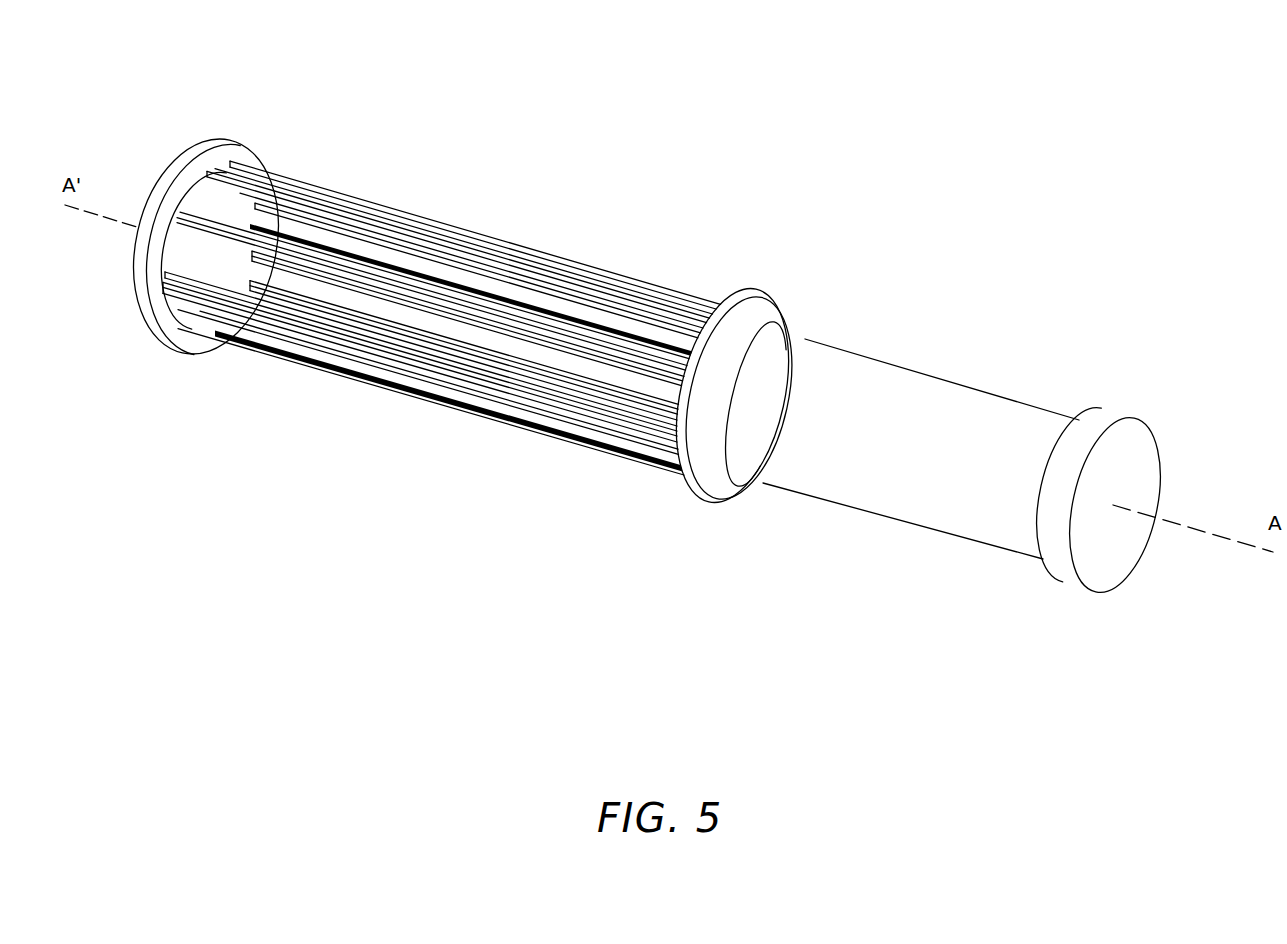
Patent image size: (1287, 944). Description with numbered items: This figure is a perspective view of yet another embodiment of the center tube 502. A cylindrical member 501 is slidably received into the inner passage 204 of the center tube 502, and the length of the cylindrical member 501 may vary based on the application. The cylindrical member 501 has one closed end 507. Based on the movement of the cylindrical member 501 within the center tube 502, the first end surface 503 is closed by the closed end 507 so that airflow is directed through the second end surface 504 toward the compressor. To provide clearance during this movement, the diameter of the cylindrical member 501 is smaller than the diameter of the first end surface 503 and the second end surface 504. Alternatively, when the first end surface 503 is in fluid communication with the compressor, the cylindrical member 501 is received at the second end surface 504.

The center tube 502 is at (1000, 122).
The second end surface 504 is at (228, 160).
The inner passage 204 is at (616, 312).
The first end surface 503 is at (765, 303).
The cylindrical member 501 is at (945, 385).
The closed end 507 is at (1133, 438).